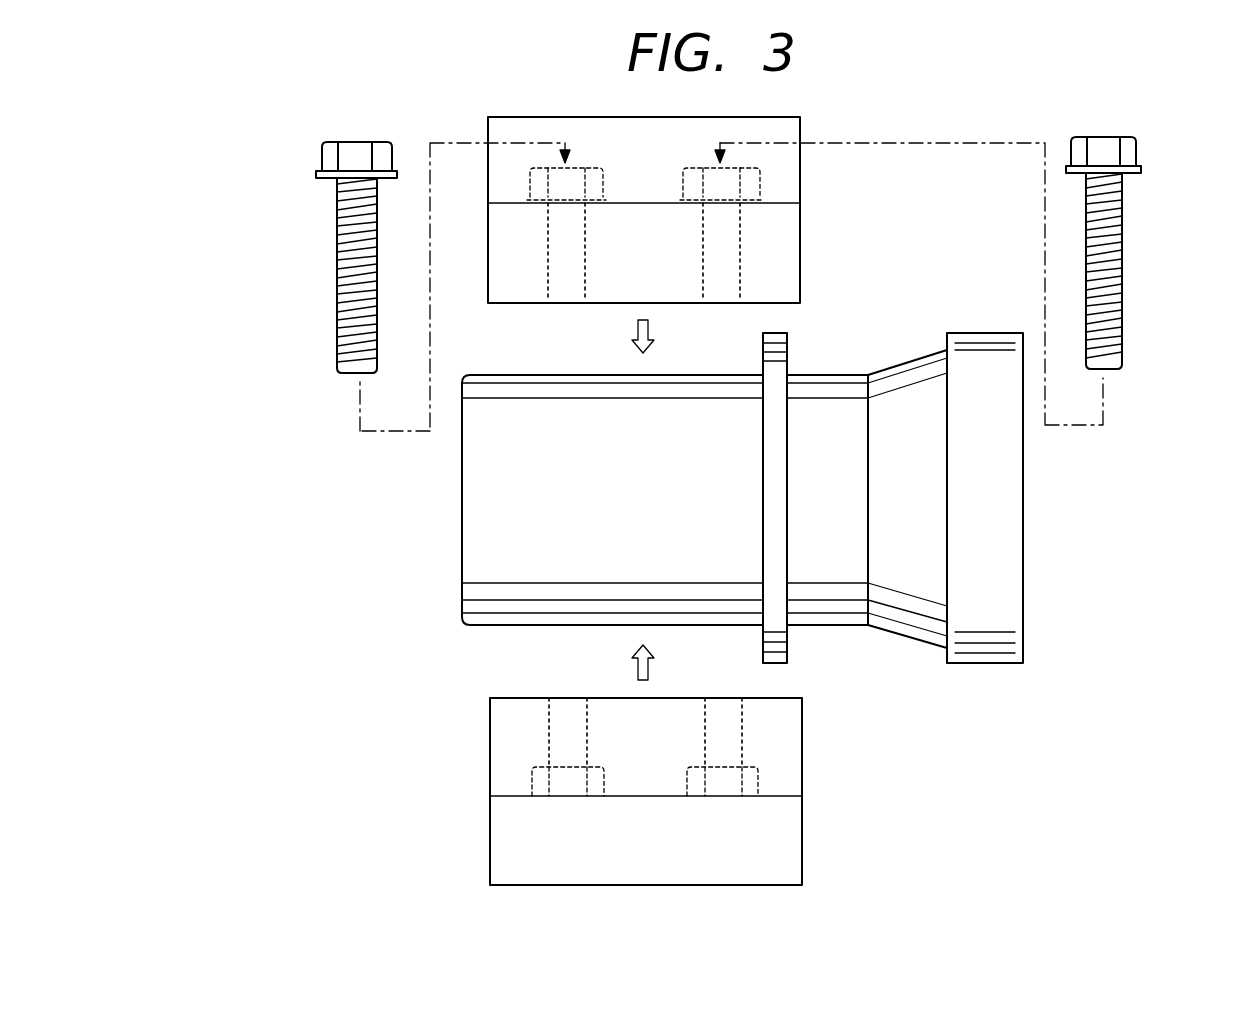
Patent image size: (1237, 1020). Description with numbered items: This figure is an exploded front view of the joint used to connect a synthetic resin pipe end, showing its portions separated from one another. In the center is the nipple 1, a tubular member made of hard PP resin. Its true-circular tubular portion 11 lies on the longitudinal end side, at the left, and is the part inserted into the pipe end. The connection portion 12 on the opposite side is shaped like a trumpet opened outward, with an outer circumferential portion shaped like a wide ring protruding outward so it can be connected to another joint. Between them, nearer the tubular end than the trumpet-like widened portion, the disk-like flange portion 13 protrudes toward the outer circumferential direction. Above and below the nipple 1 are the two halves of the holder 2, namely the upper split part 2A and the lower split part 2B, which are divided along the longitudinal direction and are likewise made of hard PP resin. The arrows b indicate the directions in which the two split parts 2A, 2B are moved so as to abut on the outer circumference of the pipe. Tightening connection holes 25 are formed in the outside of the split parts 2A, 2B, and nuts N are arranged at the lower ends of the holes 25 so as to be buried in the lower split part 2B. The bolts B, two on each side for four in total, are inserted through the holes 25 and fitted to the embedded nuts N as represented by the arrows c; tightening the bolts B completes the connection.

The nipple 1 is at (702, 486).
The true-circular tubular portion 11 is at (462, 568).
The connection portion 12 is at (996, 670).
The flange portion 13 is at (787, 336).
The holder 2 is at (654, 791).
The upper split part 2A is at (800, 158).
The lower split part 2B is at (790, 845).
The tightening connection holes 25 is at (725, 245).
The nuts N is at (752, 778).
The bolts B is at (318, 160).
The arrows b is at (653, 502).
The arrows c is at (744, 287).